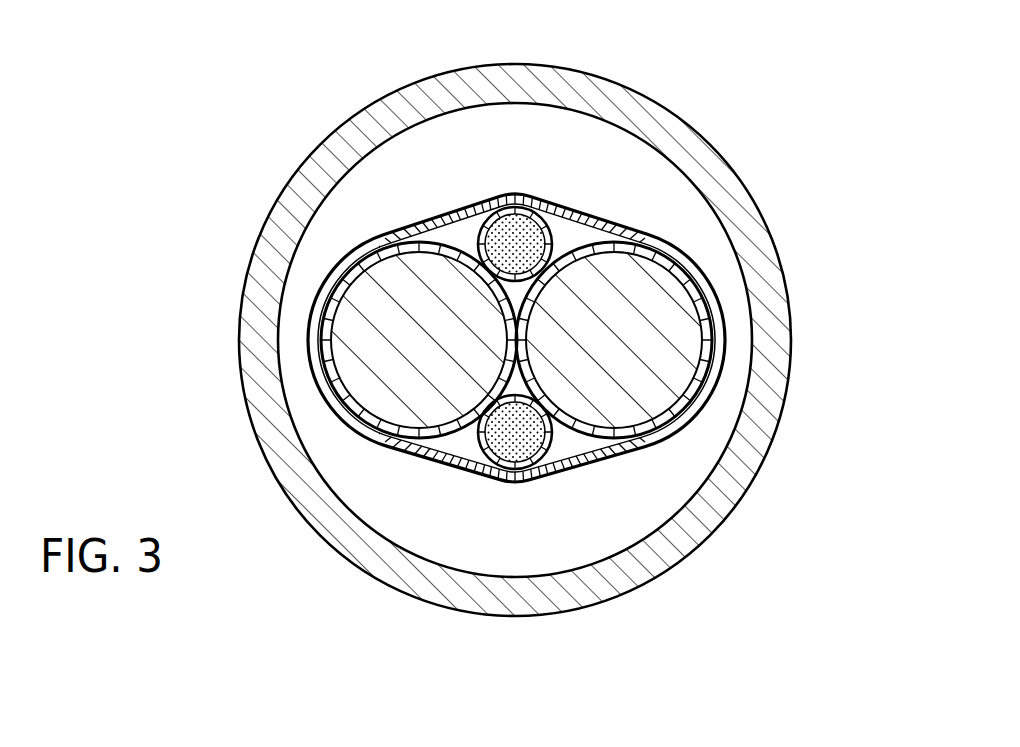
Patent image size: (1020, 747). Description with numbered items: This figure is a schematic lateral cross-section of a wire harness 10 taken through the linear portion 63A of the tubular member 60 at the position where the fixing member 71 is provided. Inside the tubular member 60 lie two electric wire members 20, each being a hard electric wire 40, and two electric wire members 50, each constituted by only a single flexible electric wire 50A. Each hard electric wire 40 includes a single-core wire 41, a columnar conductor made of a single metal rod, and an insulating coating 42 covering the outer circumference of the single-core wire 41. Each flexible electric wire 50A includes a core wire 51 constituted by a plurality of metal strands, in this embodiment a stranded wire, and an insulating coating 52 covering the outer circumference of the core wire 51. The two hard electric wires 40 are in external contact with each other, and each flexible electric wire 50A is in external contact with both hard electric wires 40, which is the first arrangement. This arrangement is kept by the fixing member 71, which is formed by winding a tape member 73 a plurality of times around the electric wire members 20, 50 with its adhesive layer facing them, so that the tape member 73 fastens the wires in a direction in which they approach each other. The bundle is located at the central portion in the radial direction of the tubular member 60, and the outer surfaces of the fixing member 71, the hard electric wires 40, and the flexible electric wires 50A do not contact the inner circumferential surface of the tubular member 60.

The cable 10 is at (787, 70).
The tubular member 60 is at (292, 172).
The linear portion 63A is at (717, 140).
The fixing member 71 is at (606, 223).
The tape member 73 is at (723, 317).
The hard electric wire 40 is at (193, 262).
The single-core wire 41 is at (352, 313).
The insulating coating 42 is at (325, 330).
The electric wire member 20 is at (712, 363).
The flexible electric wire 50A is at (552, 153).
The core wire 51 is at (488, 212).
The insulating coating 52 is at (527, 210).
The electric wire member 50 is at (549, 457).